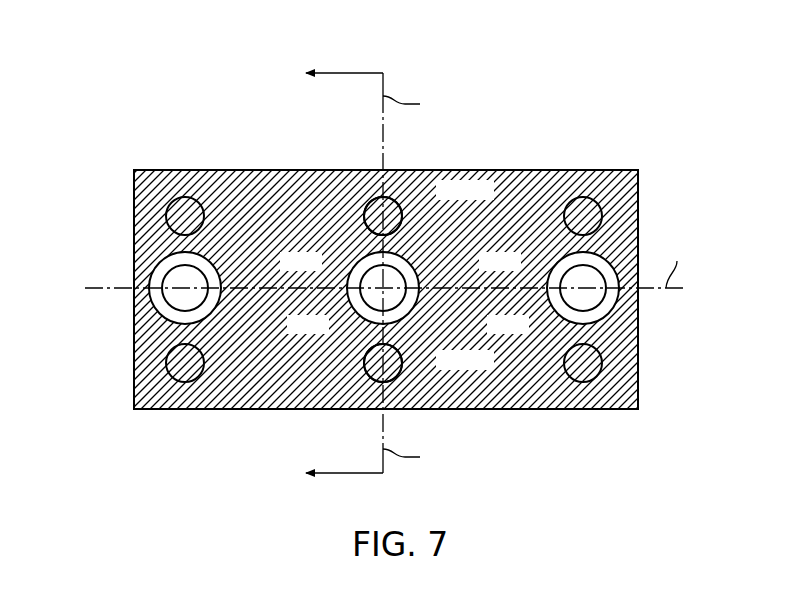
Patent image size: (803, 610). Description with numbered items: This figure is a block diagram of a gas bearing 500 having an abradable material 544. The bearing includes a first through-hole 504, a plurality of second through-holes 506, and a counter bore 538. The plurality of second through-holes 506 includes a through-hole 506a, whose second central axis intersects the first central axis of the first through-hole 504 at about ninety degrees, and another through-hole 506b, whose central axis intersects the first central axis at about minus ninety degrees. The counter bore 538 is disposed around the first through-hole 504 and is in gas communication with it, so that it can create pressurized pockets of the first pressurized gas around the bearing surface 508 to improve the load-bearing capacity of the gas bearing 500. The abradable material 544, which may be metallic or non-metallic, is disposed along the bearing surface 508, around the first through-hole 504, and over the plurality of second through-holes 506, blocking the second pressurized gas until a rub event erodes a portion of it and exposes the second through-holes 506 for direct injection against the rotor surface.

The gas bearing 500 is at (141, 35).
The bearing surface 508 is at (134, 197).
The counter bore 538 is at (155, 275).
The first through-hole 504 is at (177, 302).
The plurality of second through-holes 506 is at (375, 206).
The through-hole 506a is at (179, 371).
The other through-hole 506b is at (400, 370).
The abradable material 544 is at (543, 178).